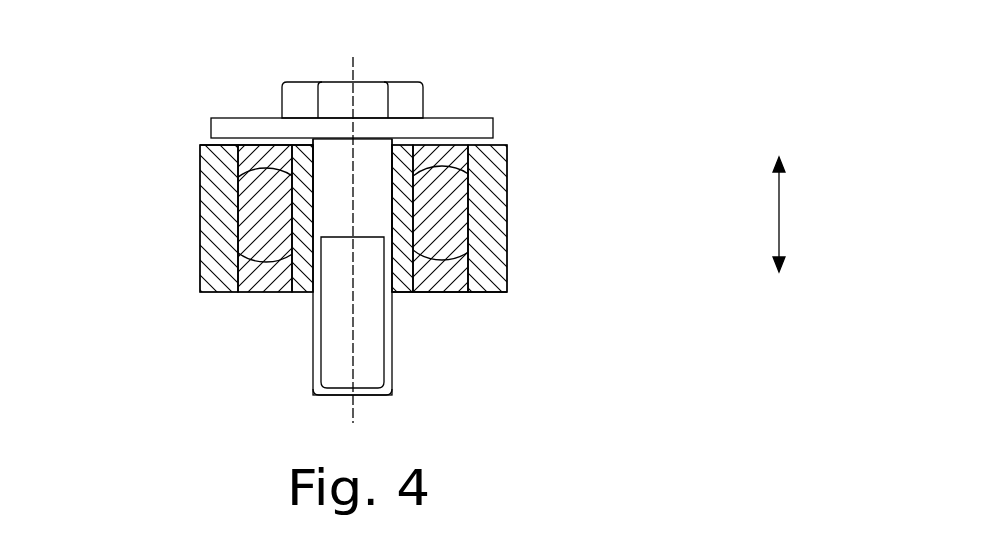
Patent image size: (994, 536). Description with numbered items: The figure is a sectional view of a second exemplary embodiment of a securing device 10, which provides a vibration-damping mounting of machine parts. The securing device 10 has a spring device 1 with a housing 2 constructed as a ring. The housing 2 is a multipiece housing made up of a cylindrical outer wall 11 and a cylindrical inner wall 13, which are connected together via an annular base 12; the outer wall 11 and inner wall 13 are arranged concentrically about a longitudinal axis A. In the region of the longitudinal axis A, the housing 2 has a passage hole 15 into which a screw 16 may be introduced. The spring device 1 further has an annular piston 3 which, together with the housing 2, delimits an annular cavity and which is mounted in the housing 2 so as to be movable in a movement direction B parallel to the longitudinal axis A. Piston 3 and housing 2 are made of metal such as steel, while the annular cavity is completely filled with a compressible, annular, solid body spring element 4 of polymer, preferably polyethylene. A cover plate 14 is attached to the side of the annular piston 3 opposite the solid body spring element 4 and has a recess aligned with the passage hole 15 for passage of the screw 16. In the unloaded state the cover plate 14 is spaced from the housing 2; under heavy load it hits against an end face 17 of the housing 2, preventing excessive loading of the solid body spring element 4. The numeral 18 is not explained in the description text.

The spring device 1 is at (255, 312).
The housing 2 is at (190, 265).
The annular piston 3 is at (443, 158).
The solid body spring element 4 is at (445, 217).
The securing device 10 is at (517, 75).
The outer wall 11 is at (497, 260).
The base 12 is at (467, 292).
The inner wall 13 is at (407, 237).
The cover plate 14 is at (463, 128).
The passage hole 15 is at (335, 203).
The screw 16 is at (373, 363).
The end face 17 is at (203, 143).
The screw shank 18 is at (333, 155).
The longitudinal axis A is at (352, 408).
The movement direction B is at (779, 215).